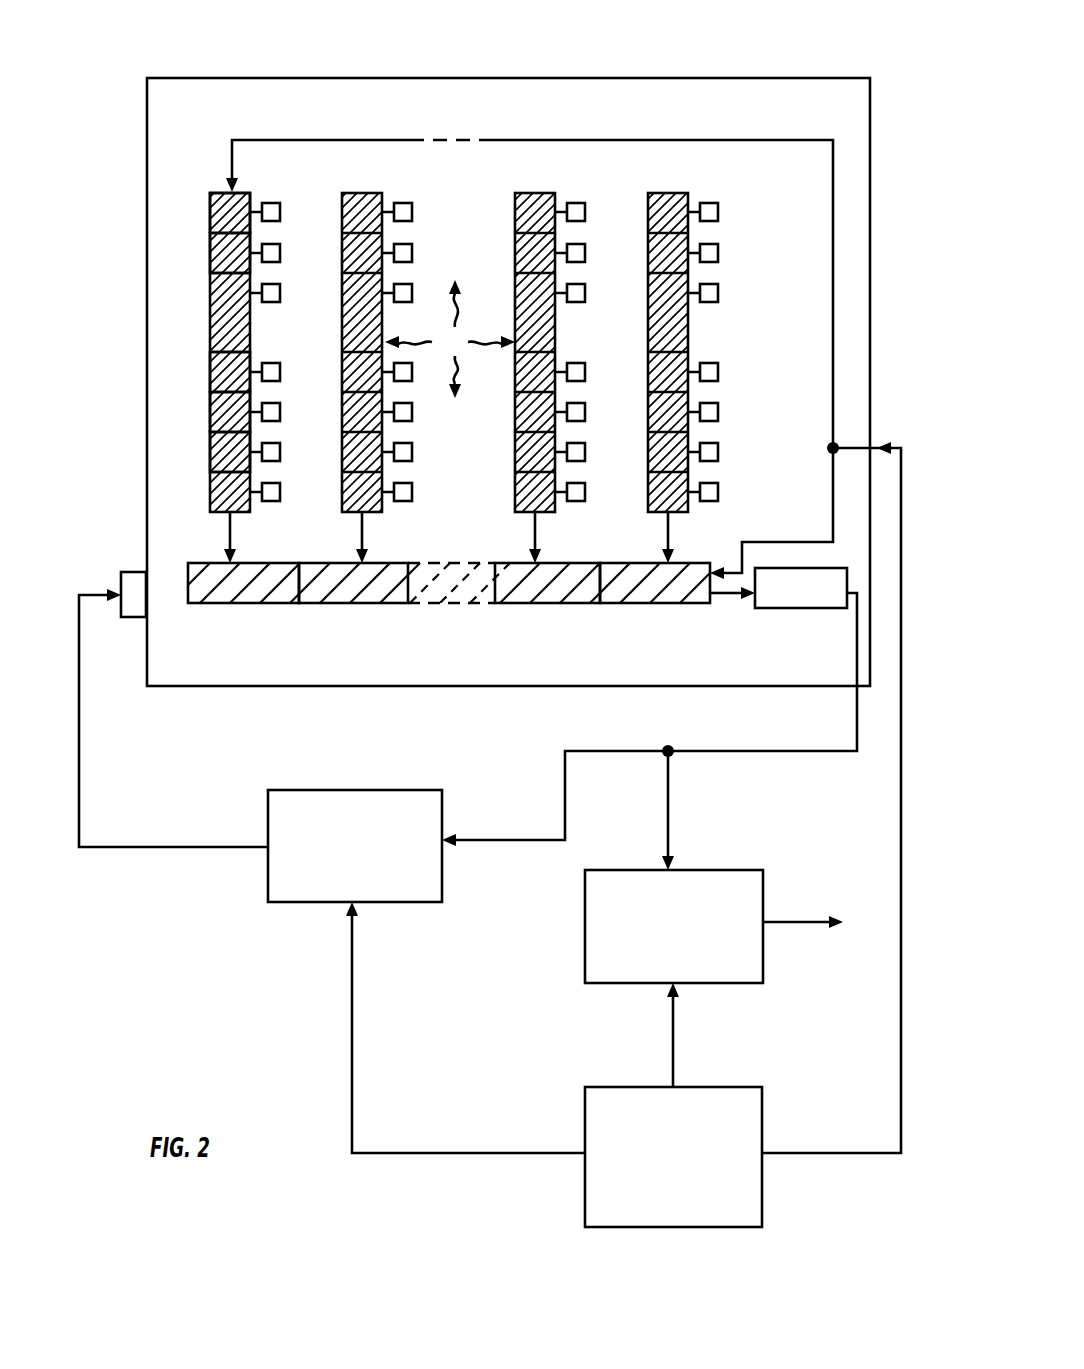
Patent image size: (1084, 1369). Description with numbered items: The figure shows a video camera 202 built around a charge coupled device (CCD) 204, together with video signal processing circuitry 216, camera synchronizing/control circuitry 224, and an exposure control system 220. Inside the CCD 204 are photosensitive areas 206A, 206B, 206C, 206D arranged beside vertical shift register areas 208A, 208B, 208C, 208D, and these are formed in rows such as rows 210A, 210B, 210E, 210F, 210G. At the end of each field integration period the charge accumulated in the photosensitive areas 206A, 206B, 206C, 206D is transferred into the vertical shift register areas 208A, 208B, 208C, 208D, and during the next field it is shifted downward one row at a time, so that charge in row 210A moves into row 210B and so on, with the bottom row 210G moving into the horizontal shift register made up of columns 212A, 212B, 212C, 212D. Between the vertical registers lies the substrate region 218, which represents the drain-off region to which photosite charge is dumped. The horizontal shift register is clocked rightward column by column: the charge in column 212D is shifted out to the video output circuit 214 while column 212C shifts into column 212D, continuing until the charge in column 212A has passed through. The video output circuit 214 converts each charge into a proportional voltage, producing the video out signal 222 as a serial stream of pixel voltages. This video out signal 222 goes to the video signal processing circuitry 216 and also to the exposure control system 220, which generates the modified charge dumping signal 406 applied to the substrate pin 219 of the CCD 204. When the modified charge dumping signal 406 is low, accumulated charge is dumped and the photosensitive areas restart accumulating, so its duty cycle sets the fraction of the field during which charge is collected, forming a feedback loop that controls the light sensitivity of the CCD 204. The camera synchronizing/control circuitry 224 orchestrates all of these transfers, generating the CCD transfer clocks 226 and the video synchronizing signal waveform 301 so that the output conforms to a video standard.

The video camera 202 is at (490, 658).
The charge coupled device 204 is at (487, 343).
The photosensitive area 206A is at (272, 202).
The photosensitive area 206B is at (404, 202).
The photosensitive area 206C is at (577, 202).
The photosensitive area 206D is at (710, 202).
The vertical shift register area 208A is at (203, 305).
The vertical shift register area 208B is at (341, 305).
The vertical shift register area 208C is at (530, 303).
The vertical shift register area 208D is at (646, 306).
The row 210A is at (209, 213).
The row 210B is at (209, 255).
The row 210E is at (209, 396).
The row 210F is at (209, 437).
The row 210G is at (209, 498).
The horizontal shift register column 212A is at (240, 604).
The horizontal shift register column 212B is at (342, 604).
The horizontal shift register column 212C is at (547, 604).
The horizontal shift register column 212D is at (650, 604).
The video output circuit 214 is at (812, 609).
The video signal processing circuitry 216 is at (585, 903).
The substrate region 218 is at (450, 339).
The substrate pin 219 is at (131, 618).
The exposure control system 220 is at (281, 903).
The video out signal 222 is at (564, 757).
The camera synchronizing/control circuitry 224 is at (585, 1212).
The CCD transfer clocks 226 is at (862, 1157).
The video synchronizing signal waveform 301 is at (673, 1025).
The modified charge dumping signal 406 is at (163, 850).